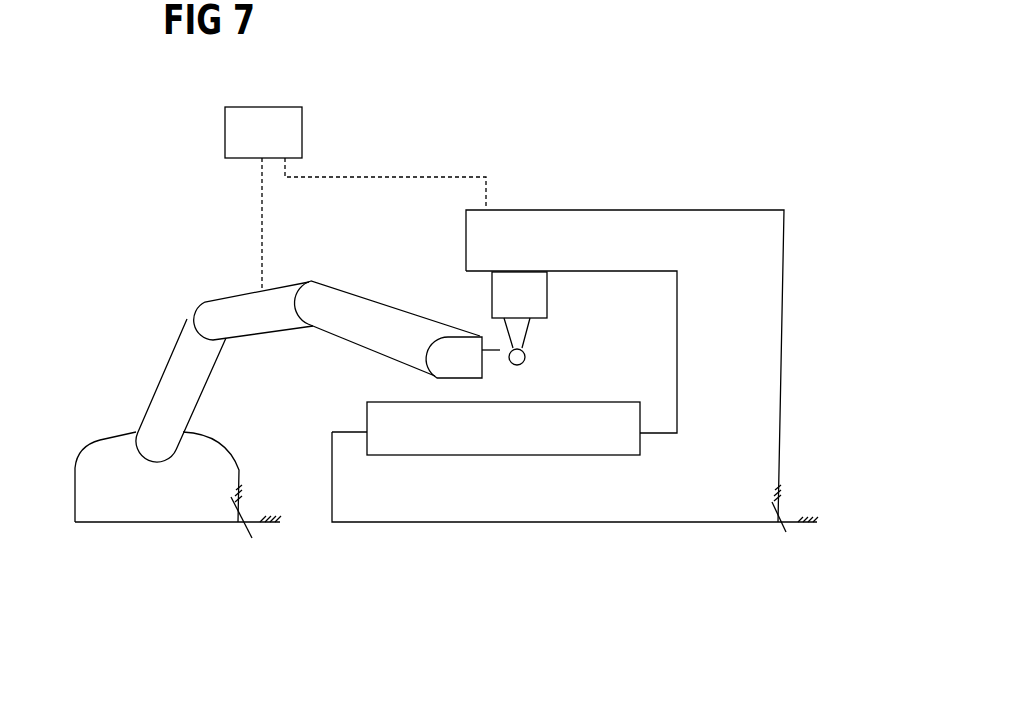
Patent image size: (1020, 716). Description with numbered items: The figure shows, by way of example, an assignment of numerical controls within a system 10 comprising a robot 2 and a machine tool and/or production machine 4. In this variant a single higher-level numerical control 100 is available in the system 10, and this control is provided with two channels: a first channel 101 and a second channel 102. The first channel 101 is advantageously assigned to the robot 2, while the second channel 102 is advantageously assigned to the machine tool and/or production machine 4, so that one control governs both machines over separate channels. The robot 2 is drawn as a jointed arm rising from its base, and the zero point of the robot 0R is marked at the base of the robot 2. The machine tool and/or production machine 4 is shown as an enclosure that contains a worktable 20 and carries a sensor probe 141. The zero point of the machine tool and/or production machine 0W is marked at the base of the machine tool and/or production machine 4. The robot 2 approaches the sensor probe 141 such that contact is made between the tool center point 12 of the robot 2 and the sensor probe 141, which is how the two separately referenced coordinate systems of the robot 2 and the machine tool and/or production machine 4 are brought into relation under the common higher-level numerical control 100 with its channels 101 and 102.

The system 10 is at (143, 105).
The higher-level numerical control 100 is at (302, 127).
The first channel 101 is at (262, 230).
The second channel 102 is at (462, 177).
The machine tool and/or production machine 4 is at (784, 322).
The sensor probe 141 is at (527, 355).
The tool center point 12 is at (498, 349).
The worktable 20 is at (365, 423).
The robot 2 is at (163, 370).
The zero point of the robot 0R is at (238, 522).
The zero point of the machine tool and/or production machine 0W is at (778, 522).